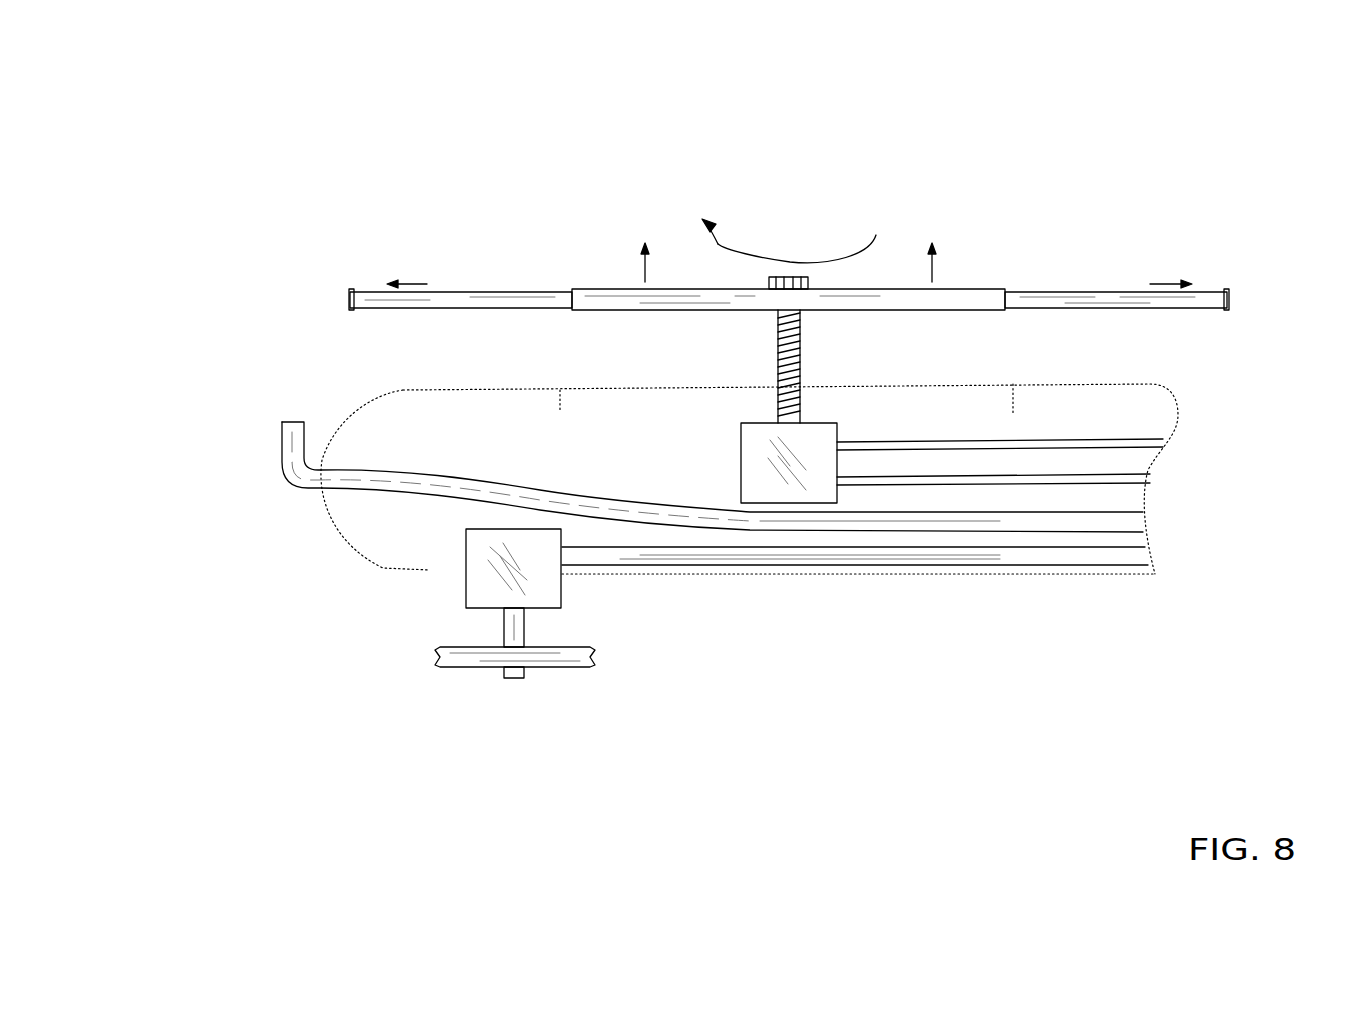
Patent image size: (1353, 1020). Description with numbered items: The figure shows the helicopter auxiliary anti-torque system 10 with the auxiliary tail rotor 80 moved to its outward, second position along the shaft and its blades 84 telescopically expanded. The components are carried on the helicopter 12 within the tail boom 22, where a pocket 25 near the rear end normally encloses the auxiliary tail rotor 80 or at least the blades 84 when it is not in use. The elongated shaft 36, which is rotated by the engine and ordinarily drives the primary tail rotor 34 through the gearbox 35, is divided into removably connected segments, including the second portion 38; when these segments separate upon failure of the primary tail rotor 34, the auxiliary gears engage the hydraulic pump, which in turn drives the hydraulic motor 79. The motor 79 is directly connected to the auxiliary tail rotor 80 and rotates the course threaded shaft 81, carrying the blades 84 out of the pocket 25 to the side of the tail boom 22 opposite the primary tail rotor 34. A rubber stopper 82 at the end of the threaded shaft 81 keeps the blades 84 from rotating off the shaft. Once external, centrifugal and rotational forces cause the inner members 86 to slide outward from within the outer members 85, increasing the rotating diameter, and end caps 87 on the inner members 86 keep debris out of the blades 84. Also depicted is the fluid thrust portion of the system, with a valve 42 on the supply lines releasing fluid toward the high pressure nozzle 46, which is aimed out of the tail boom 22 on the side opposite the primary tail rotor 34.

The helicopter auxiliary anti-torque system 10 is at (215, 140).
The helicopter 12 is at (325, 536).
The tail boom 22 is at (373, 550).
The pocket 25 is at (557, 410).
The primary tail rotor 34 is at (568, 688).
The gearbox 35 is at (467, 588).
The elongated shaft 36 is at (1103, 580).
The second portion 38 is at (962, 562).
The valve 42 is at (987, 518).
The high pressure nozzle 46 is at (287, 428).
The hydraulic motor 79 is at (753, 468).
The auxiliary tail rotor 80 is at (668, 240).
The course threaded shaft 81 is at (800, 332).
The rubber stopper 82 is at (809, 286).
The blades 84 is at (968, 278).
The outer members 85 is at (630, 288).
The inner members 86 is at (452, 297).
The end caps 87 is at (350, 290).